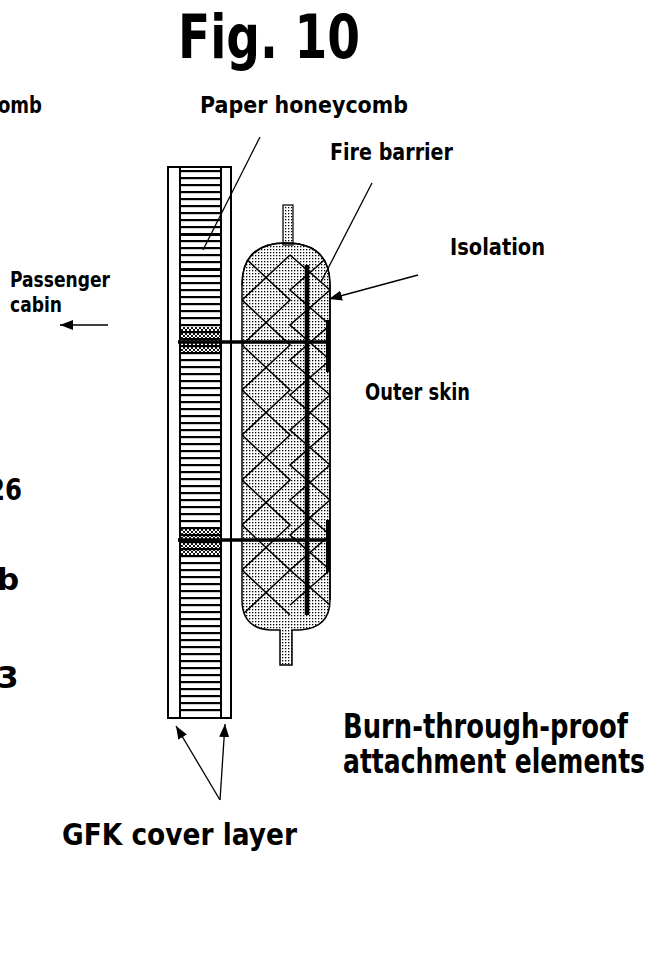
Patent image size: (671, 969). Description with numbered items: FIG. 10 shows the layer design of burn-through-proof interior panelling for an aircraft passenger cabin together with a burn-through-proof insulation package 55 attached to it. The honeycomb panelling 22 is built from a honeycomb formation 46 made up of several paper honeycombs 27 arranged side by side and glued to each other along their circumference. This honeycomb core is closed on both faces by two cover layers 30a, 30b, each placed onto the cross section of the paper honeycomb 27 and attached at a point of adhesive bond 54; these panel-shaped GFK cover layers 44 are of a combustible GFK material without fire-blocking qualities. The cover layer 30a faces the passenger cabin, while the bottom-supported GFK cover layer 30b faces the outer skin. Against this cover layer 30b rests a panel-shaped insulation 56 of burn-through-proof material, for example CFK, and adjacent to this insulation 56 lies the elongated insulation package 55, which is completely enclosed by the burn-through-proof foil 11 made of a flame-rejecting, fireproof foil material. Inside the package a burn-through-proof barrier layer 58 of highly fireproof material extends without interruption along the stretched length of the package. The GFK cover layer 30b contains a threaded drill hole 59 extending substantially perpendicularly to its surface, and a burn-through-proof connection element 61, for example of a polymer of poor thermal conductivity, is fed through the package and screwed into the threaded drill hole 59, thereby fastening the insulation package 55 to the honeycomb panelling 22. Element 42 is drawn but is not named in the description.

The burn-through-proof foil 11 is at (327, 288).
The honeycomb panelling 22 is at (142, 560).
The paper honeycomb 27 is at (195, 209).
The cover layer 30a is at (173, 607).
The bottom-supported GFK cover layer 30b is at (228, 648).
The honeycomb cell wall 42 is at (197, 273).
The panel-shaped GFK cover layer 44 is at (165, 654).
The honeycomb formation 46 is at (198, 165).
The point of adhesive bond 54 is at (176, 233).
The insulation package 55 is at (367, 343).
The panel-shaped insulation 56 is at (238, 417).
The burn-through-proof barrier layer 58 is at (327, 607).
The threaded drill hole 59 is at (177, 349).
The burn-through-proof connection element 61 is at (331, 352).